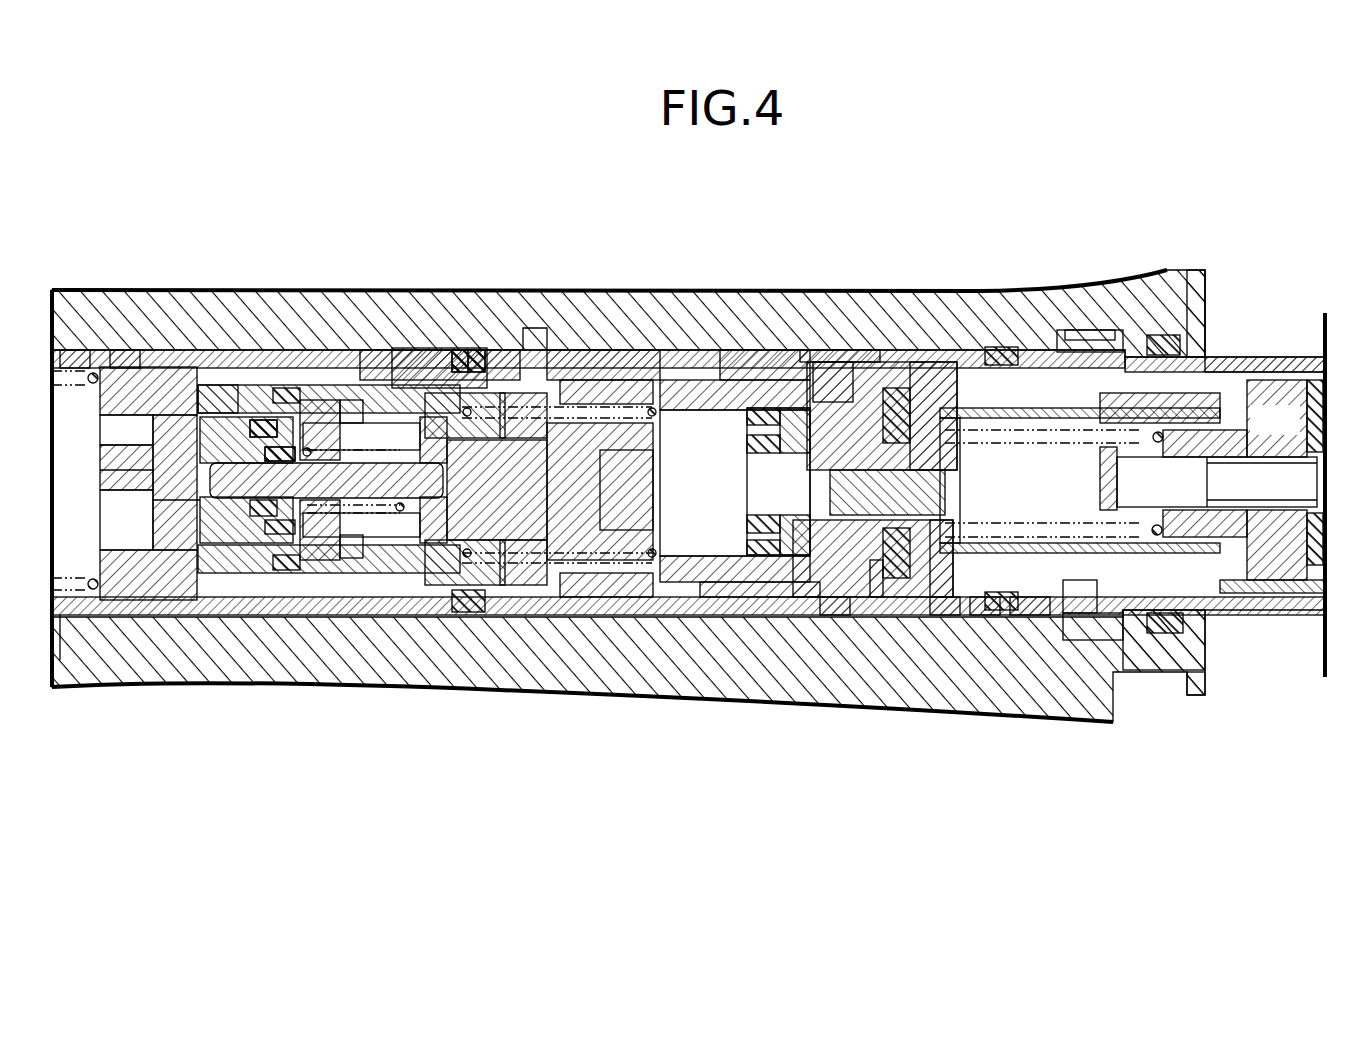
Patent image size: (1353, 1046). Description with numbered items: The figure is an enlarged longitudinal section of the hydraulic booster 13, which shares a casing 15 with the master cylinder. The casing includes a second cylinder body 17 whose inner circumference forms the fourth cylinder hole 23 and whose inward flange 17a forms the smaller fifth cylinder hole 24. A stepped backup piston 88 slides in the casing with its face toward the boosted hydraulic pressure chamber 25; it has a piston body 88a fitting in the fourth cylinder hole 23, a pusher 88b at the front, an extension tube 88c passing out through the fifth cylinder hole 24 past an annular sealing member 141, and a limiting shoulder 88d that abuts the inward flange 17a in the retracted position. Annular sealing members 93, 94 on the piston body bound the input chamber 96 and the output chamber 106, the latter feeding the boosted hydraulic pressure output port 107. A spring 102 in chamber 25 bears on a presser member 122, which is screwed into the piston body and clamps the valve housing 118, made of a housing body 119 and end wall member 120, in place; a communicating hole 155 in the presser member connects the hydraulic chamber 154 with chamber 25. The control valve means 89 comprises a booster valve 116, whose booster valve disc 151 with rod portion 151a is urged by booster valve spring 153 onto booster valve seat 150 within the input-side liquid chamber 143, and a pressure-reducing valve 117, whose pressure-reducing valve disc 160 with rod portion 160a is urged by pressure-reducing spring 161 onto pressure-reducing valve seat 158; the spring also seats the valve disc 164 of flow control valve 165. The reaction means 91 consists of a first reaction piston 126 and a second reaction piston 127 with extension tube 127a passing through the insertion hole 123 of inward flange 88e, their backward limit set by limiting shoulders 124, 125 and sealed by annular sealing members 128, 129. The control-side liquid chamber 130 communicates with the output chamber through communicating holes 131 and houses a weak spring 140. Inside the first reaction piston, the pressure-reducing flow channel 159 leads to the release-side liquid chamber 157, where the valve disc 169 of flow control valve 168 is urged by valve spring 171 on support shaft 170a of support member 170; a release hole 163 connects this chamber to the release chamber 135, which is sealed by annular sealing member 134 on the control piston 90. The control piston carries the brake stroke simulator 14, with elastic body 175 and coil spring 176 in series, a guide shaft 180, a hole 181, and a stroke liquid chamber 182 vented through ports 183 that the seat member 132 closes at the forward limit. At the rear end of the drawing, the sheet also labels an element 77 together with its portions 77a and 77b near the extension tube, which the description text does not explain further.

The hydraulic booster 13 is at (598, 350).
The brake stroke simulator 14 is at (1212, 650).
The casing 15 is at (850, 287).
The second cylinder body 17 is at (290, 300).
The inward flange 17a is at (1205, 330).
The fourth cylinder hole 23 is at (640, 565).
The fifth cylinder hole 24 is at (1160, 633).
The boosted hydraulic pressure chamber 25 is at (88, 436).
The end wall 77 is at (1320, 340).
The lower wall portion 77a is at (1270, 612).
The upper wall portion 77b is at (1205, 285).
The backup piston 88 is at (770, 352).
The piston body 88a is at (830, 602).
The pusher 88b is at (125, 352).
The extension tube 88c is at (1225, 358).
The limiting shoulder 88d is at (1160, 335).
The inward flange 88e is at (940, 602).
The control valve means 89 is at (500, 218).
The control piston 90 is at (1090, 640).
The reaction means 91 is at (815, 772).
The annular sealing member 93 is at (440, 565).
The annular sealing member 94 is at (1000, 347).
The input chamber 96 is at (90, 352).
The spring 102 is at (80, 660).
The output chamber 106 is at (812, 358).
The boosted hydraulic pressure output port 107 is at (580, 600).
The booster valve 116 is at (460, 355).
The pressure-reducing valve 117 is at (480, 352).
The valve housing 118 is at (312, 750).
The housing body 119 is at (290, 585).
The end wall member 120 is at (245, 585).
The presser member 122 is at (150, 602).
The insertion hole 123 is at (945, 460).
The limiting shoulder 124 is at (752, 408).
The limiting shoulder 125 is at (880, 388).
The first reaction piston 126 is at (752, 560).
The second reaction piston 127 is at (775, 560).
The extension tube 127a is at (935, 445).
The annular sealing member 128 is at (745, 565).
The annular sealing member 129 is at (700, 392).
The control-side liquid chamber 130 is at (620, 562).
The communicating holes 131 is at (545, 565).
The seat member 132 is at (980, 602).
The annular sealing member 134 is at (1205, 625).
The release chamber 135 is at (1085, 330).
The spring 140 is at (640, 400).
The annular sealing member 141 is at (1195, 680).
The input-side liquid chamber 143 is at (352, 428).
The booster valve seat 150 is at (318, 400).
The booster valve disc 151 is at (330, 605).
The rod portion 151a is at (210, 388).
The booster valve spring 153 is at (325, 565).
The hydraulic chamber 154 is at (175, 500).
The communicating hole 155 is at (160, 470).
The release-side liquid chamber 157 is at (945, 500).
The pressure-reducing valve seat 158 is at (680, 395).
The pressure-reducing flow channel 159 is at (670, 480).
The pressure-reducing valve disc 160 is at (640, 562).
The rod portion 160a is at (470, 565).
The pressure-reducing spring 161 is at (520, 545).
The release hole 163 is at (885, 445).
The valve disc 164 is at (470, 430).
The flow control valve 165 is at (400, 545).
The flow control valve 168 is at (880, 565).
The valve disc 169 is at (778, 408).
The support member 170 is at (1020, 524).
The support shaft 170a is at (905, 530).
The valve spring 171 is at (1020, 612).
The elastic body 175 is at (1290, 455).
The coil spring 176 is at (1180, 520).
The guide shaft 180 is at (1315, 491).
The hole 181 is at (1125, 472).
The stroke liquid chamber 182 is at (1110, 330).
The ports 183 is at (965, 430).